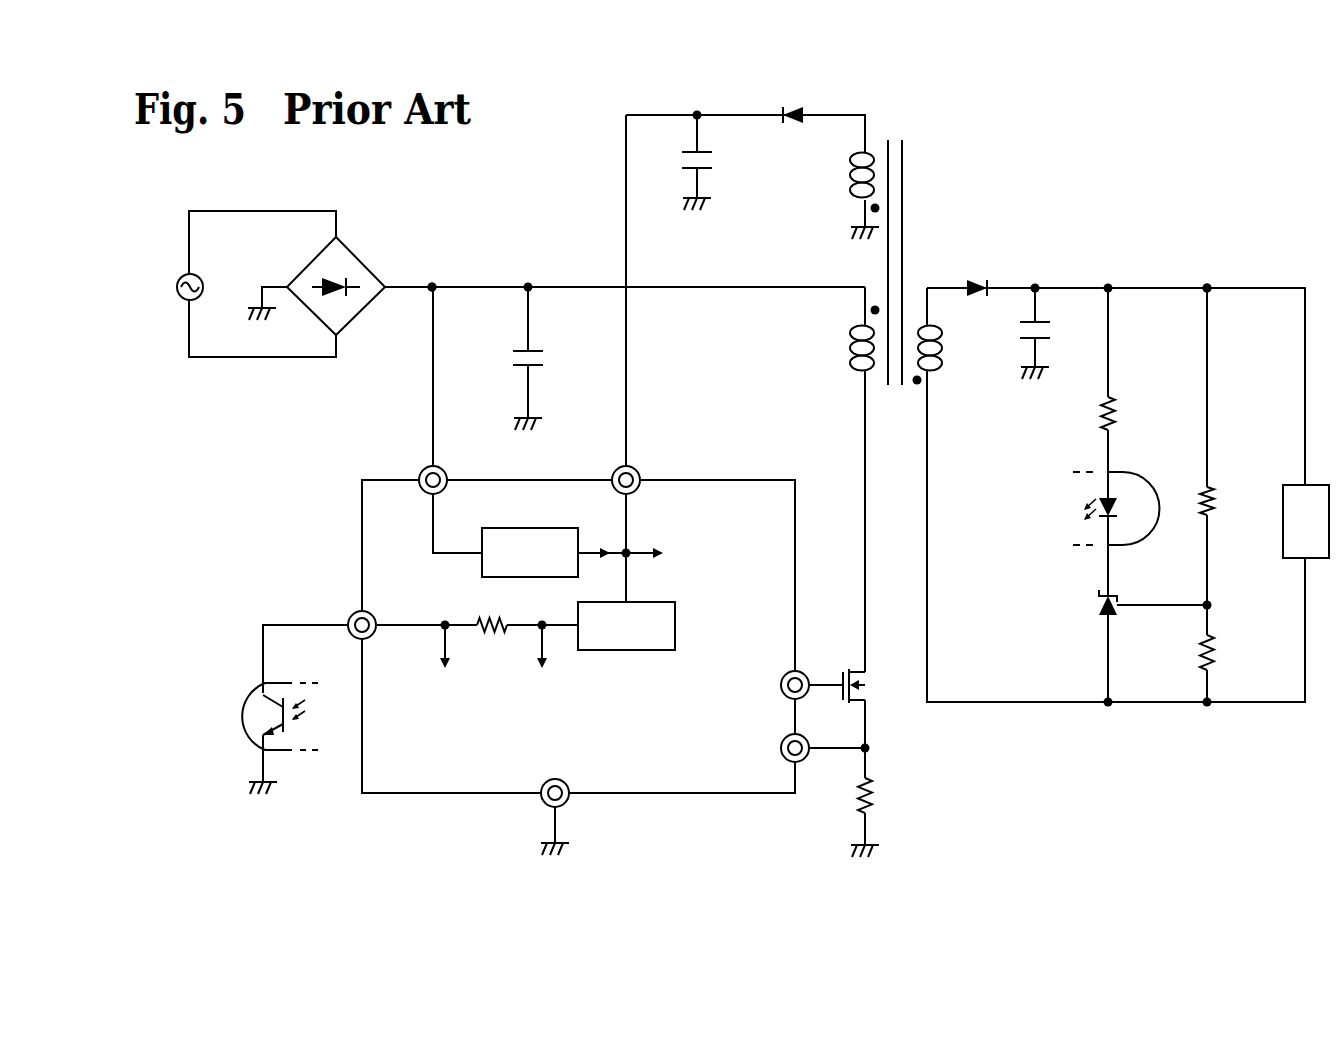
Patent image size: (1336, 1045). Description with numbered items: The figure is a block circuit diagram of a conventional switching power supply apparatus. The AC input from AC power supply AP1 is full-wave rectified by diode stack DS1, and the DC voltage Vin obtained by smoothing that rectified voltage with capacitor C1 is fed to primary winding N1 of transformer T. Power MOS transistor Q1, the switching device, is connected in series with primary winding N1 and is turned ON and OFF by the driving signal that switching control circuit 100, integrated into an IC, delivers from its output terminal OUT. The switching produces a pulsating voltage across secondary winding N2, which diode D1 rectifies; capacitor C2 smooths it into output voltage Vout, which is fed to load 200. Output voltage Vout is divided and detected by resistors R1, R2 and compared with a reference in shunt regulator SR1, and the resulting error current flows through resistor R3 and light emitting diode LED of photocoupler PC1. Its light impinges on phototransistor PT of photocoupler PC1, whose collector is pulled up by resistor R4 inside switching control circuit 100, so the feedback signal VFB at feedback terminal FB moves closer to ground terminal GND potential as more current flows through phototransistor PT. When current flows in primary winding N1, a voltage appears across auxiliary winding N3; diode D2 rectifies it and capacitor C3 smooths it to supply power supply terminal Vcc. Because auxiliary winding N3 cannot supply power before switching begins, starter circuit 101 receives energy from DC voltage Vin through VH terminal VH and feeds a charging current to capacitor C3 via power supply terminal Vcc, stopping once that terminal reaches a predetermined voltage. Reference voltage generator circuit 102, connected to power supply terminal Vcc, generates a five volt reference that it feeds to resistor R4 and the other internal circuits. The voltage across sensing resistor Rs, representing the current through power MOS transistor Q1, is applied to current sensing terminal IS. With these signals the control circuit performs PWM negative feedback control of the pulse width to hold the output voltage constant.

The AC power supply AP1 is at (201, 276).
The diode stack DS1 is at (355, 256).
The DC voltage Vin is at (458, 274).
The capacitor C1 is at (543, 358).
The capacitor C3 is at (714, 162).
The diode D2 is at (797, 104).
The auxiliary winding N3 is at (850, 177).
The transformer T is at (897, 138).
The primary winding N1 is at (850, 350).
The secondary winding N2 is at (940, 355).
The diode D1 is at (979, 274).
The output voltage Vout is at (1246, 277).
The capacitor C2 is at (1051, 348).
The resistor R3 is at (1096, 413).
The light emitting diode LED is at (1087, 488).
The photocoupler PC1 is at (1127, 472).
The phototransistor PT is at (291, 744).
The shunt regulator SR1 is at (1101, 616).
The resistor R1 is at (1225, 501).
The resistor R2 is at (1225, 652).
The load 200 is at (1293, 485).
The switching control circuit 100 is at (686, 480).
The starter circuit 101 is at (503, 528).
The reference voltage generator circuit 102 is at (652, 651).
The resistor R4 is at (492, 613).
The power MOS transistor Q1 is at (873, 686).
The sensing resistor Rs is at (879, 817).
The VH terminal VH is at (403, 463).
The power supply terminal Vcc is at (595, 463).
The feedback terminal FB is at (339, 605).
The ground terminal GND is at (579, 833).
The output terminal OUT is at (822, 660).
The current sensing terminal IS is at (821, 728).
The feedback signal VFB is at (446, 685).